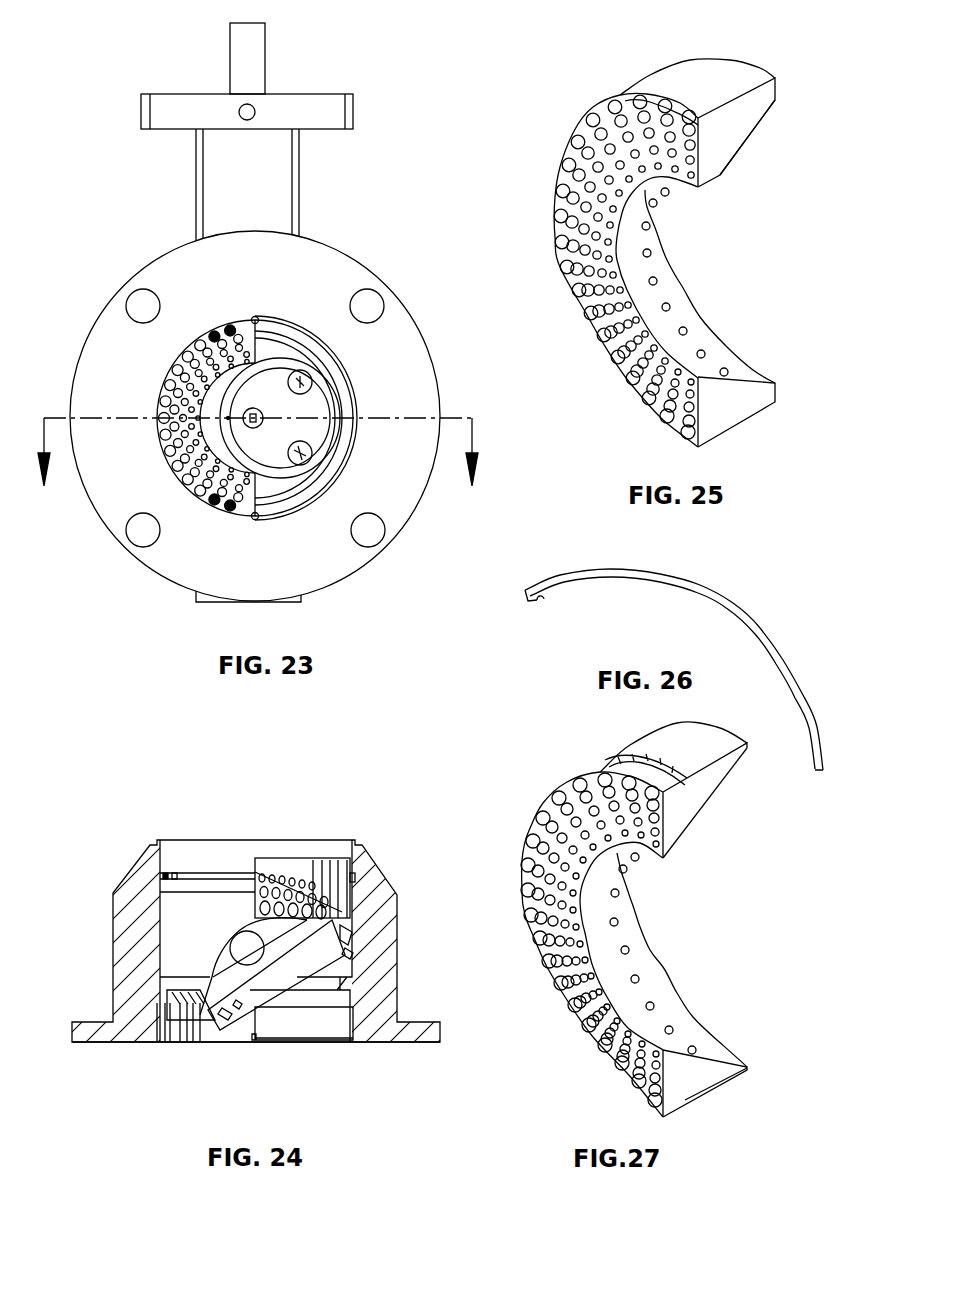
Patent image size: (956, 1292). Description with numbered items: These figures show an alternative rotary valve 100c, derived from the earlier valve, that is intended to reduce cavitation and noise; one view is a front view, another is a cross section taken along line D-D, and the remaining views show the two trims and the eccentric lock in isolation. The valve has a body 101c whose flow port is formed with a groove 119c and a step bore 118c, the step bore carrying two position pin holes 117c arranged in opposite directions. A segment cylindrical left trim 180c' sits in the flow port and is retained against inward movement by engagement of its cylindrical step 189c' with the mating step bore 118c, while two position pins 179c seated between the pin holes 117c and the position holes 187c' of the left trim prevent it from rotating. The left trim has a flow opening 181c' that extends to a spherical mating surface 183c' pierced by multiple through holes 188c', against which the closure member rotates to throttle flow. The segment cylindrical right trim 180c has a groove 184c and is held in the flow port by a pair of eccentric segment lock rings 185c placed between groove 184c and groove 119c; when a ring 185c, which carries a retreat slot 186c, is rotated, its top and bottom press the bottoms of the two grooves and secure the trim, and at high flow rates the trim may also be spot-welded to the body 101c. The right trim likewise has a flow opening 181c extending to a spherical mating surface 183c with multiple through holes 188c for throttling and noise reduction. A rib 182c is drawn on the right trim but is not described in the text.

In FIG. 23, the rotary valve 100c is at (258, 304).
In FIG. 24, the body 101c is at (325, 894).
In FIG. 24, the position pin holes 117c is at (245, 1018).
In FIG. 24, the step bore 118c is at (272, 1080).
In FIG. 24, the groove 119c is at (235, 815).
In FIG. 23, the position pins 179c is at (365, 381).
In FIG. 24, the right trim 180c is at (363, 811).
In FIG. 27, the right trim 180c is at (629, 919).
In FIG. 23, the left trim 180c' is at (162, 354).
In FIG. 24, the left trim 180c' is at (129, 1039).
In FIG. 25, the left trim 180c' is at (647, 244).
In FIG. 27, the flow opening 181c is at (714, 960).
In FIG. 25, the flow opening 181c' is at (751, 321).
In FIG. 27, the retaining lip 182c is at (723, 784).
In FIG. 27, the spherical mating surface 183c is at (752, 813).
In FIG. 25, the spherical mating surface 183c' is at (790, 179).
In FIG. 27, the groove 184c is at (748, 1062).
In FIG. 26, the eccentric segment lock rings 185c is at (693, 644).
In FIG. 26, the retreat slot 186c is at (590, 620).
In FIG. 25, the position holes 187c' is at (779, 240).
In FIG. 27, the through holes 188c is at (539, 940).
In FIG. 25, the through holes 188c' is at (589, 267).
In FIG. 25, the cylindrical step 189c' is at (596, 79).